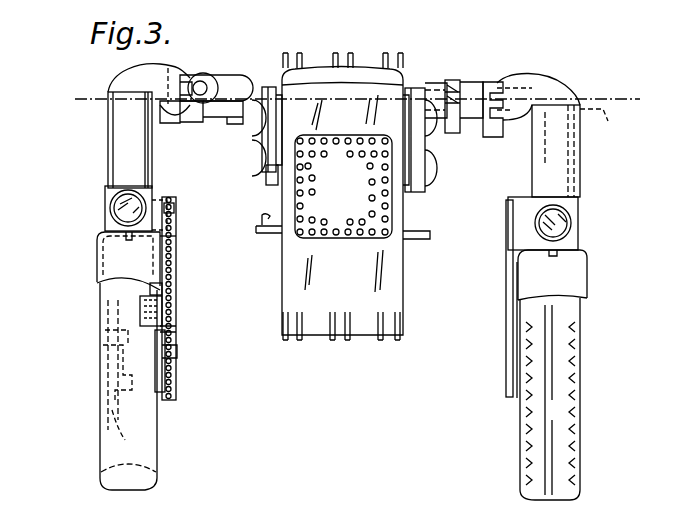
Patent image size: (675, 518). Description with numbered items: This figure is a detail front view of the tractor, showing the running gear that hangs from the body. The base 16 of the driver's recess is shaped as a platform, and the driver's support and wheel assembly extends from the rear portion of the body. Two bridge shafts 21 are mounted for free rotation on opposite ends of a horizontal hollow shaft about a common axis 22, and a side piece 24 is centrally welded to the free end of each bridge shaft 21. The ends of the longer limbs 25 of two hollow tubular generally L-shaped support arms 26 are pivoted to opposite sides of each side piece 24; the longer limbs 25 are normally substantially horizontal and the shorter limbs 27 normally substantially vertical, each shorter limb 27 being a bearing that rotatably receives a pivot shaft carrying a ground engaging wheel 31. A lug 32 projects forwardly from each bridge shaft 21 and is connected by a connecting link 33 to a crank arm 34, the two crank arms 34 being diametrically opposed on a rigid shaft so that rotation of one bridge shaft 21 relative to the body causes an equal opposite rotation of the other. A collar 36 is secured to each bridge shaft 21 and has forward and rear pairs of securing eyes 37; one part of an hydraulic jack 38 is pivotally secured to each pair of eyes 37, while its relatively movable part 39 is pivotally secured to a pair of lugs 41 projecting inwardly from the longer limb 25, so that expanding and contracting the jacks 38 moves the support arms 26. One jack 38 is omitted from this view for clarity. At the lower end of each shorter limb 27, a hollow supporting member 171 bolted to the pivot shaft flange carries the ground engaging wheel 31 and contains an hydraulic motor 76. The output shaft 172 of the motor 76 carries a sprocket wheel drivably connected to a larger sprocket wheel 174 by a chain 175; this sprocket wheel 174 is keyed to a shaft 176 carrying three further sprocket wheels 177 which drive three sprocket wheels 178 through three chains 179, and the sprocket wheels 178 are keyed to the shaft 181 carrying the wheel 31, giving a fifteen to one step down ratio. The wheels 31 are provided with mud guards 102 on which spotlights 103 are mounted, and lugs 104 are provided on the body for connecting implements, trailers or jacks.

The base 16 is at (263, 226).
The bridge shaft 21 is at (217, 116).
The common axis 22 is at (357, 119).
The side piece 24 is at (191, 121).
The longer limb 25 is at (142, 78).
The support arm 26 is at (581, 98).
The shorter limb 27 is at (147, 163).
The ground engaging wheel 31 is at (137, 471).
The lug 32 is at (263, 87).
The connecting link 33 is at (265, 132).
The crank arm 34 is at (272, 174).
The collar 36 is at (455, 130).
The securing eyes 37 is at (453, 98).
The hydraulic jack 38 is at (223, 78).
The relatively movable part 39 is at (208, 79).
The lugs 41 is at (190, 85).
The hydraulic motor 76 is at (108, 194).
The mud guard 102 is at (174, 265).
The spotlight 103 is at (124, 176).
The lugs 104 is at (382, 339).
The hollow supporting member 171 is at (175, 191).
The output shaft 172 is at (175, 218).
The larger sprocket wheel 174 is at (173, 353).
The chain 175 is at (175, 241).
The shaft 176 is at (173, 308).
The sprocket wheels 177 is at (181, 292).
The sprocket wheels 178 is at (166, 378).
The chains 179 is at (175, 329).
The shaft 181 is at (115, 380).